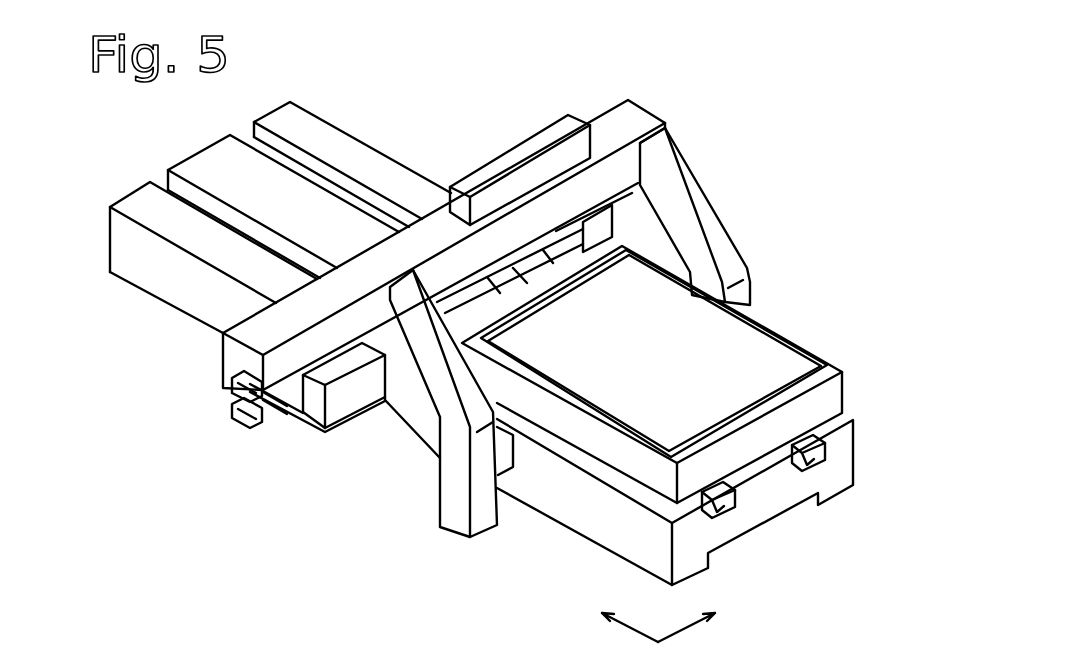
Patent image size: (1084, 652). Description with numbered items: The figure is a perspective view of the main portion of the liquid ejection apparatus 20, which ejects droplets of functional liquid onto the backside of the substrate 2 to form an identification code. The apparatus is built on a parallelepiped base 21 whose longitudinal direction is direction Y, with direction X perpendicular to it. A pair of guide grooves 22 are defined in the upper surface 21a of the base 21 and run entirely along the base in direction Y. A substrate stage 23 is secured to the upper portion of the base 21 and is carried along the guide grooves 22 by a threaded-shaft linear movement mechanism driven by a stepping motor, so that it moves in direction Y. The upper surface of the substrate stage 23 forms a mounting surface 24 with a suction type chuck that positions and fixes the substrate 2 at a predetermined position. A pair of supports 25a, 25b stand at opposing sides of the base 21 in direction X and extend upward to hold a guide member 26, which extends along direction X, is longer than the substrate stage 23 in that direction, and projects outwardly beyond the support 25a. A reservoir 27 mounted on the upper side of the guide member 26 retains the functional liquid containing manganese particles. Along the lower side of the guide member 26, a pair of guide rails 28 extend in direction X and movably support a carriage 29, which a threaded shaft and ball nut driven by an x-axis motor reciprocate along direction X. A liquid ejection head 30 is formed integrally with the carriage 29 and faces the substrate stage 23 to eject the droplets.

The substrate 2 is at (793, 341).
The liquid ejection apparatus 20 is at (801, 138).
The base 21 is at (857, 456).
The upper surface 21a is at (606, 476).
The guide grooves 22 is at (717, 505).
The substrate stage 23 is at (848, 384).
The mounting surface 24 is at (833, 368).
The support 25a is at (458, 517).
The support 25b is at (752, 303).
The guide member 26 is at (640, 116).
The reservoir 27 is at (562, 127).
The guide rails 28 is at (238, 416).
The carriage 29 is at (375, 396).
The liquid ejection head 30 is at (306, 420).